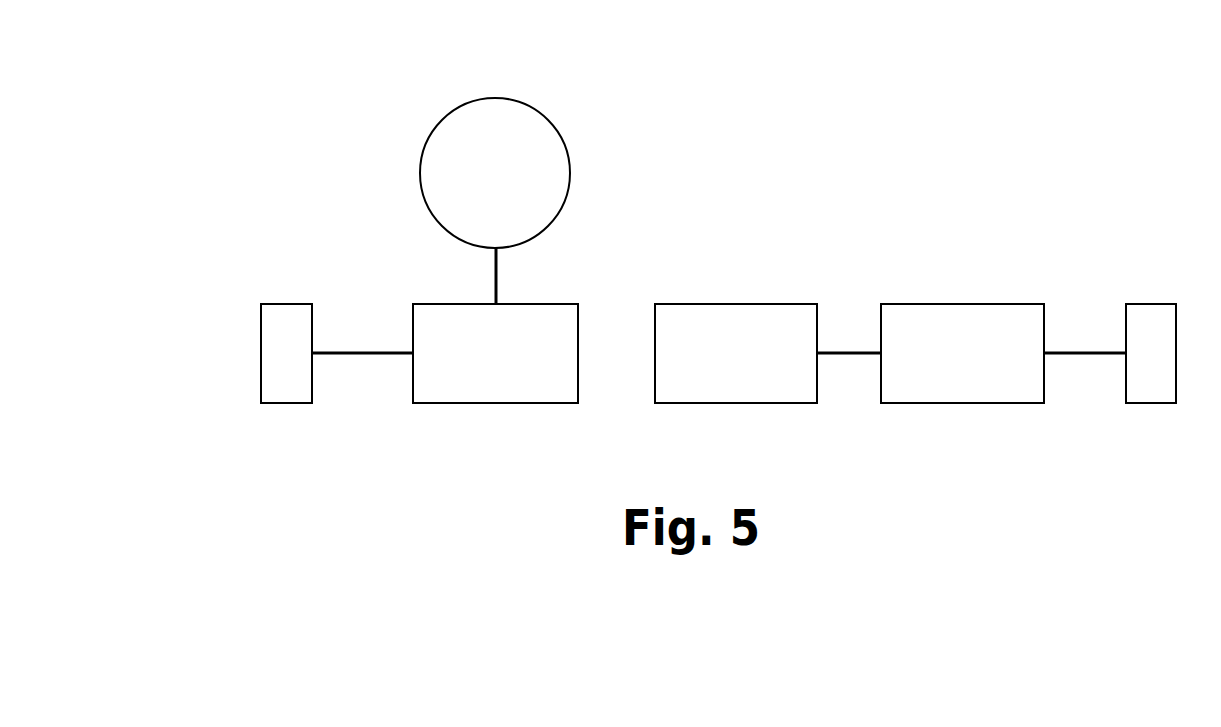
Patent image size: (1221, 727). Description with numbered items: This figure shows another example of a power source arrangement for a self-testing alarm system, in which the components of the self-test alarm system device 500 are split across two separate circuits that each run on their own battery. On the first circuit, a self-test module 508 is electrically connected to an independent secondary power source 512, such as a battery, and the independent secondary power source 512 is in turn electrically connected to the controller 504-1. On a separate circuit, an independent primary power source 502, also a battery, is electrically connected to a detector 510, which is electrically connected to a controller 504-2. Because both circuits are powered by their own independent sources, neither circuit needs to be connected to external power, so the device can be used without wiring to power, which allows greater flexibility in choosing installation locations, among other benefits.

The self-test alarm system device 500 is at (232, 78).
The independent primary power source 502 is at (742, 303).
The controller 504-1 is at (287, 303).
The controller 504-2 is at (1150, 303).
The self-test module 508 is at (507, 99).
The detector 510 is at (952, 303).
The independent secondary power source 512 is at (443, 303).